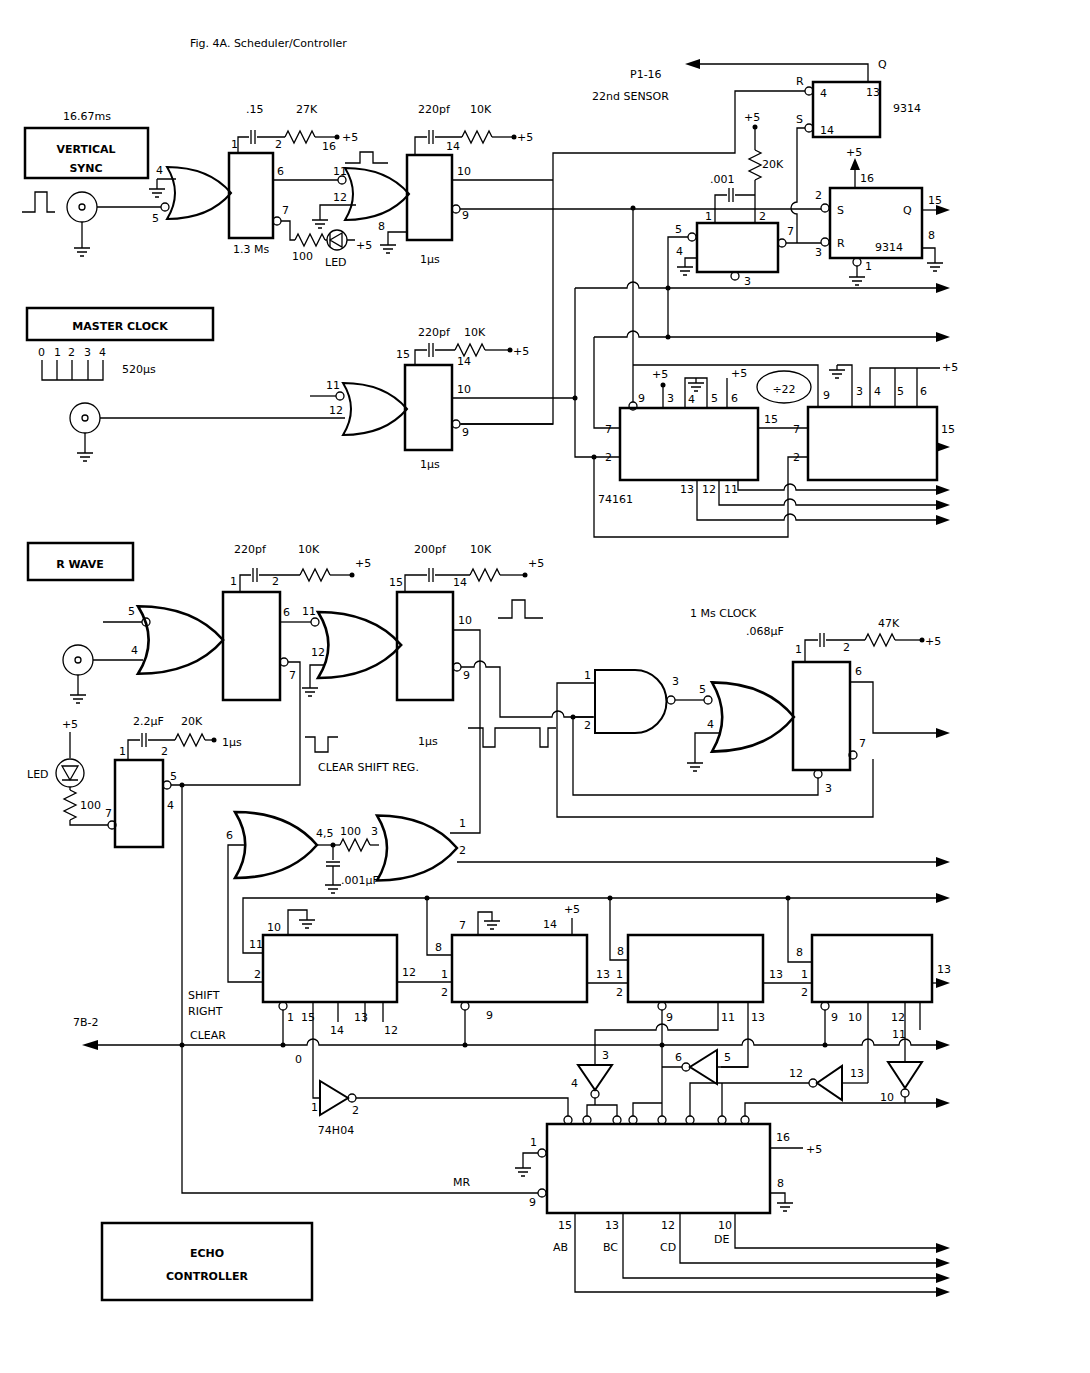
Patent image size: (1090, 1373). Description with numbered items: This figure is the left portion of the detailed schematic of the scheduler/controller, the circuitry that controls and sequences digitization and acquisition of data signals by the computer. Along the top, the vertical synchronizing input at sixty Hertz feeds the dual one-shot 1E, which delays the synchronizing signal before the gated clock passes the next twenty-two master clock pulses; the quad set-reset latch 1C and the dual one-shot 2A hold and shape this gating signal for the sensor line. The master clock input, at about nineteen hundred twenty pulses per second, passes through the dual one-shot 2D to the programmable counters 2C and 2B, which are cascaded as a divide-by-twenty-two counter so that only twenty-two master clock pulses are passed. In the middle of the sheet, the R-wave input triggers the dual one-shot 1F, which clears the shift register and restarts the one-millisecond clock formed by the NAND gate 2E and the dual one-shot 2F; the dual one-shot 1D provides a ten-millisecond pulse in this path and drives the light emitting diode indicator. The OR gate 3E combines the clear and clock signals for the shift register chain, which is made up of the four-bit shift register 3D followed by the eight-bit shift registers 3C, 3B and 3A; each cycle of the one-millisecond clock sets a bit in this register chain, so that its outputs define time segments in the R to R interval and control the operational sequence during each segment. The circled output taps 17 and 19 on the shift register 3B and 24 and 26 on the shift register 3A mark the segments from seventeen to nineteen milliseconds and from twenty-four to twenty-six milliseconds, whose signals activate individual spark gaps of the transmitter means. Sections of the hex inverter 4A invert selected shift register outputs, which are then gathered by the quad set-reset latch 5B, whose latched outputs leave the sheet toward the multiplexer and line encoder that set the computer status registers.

The shift register output tap 17 is at (661, 1019).
The shift register output tap 19 is at (738, 1020).
The shift register output tap 24 is at (870, 1033).
The shift register output tap 26 is at (915, 1022).
The quad set-reset latch 1C is at (867, 170).
The dual one-shot 1D is at (139, 814).
The dual one-shot 1E is at (340, 196).
The dual one-shot 1F is at (338, 646).
The dual one-shot 2A is at (737, 247).
The programmable counter 2B is at (872, 443).
The programmable counter 2C is at (689, 444).
The dual one-shot 2D is at (428, 407).
The NAND gate 2E is at (631, 701).
The dual one-shot 2F is at (821, 716).
The eight-bit shift register 3A is at (872, 968).
The eight-bit shift register 3B is at (695, 968).
The eight-bit shift register 3C is at (519, 968).
The four-bit shift register 3D is at (330, 968).
The OR gate 3E is at (346, 846).
The hex inverter 4A is at (621, 1082).
The quad set-reset latch 5B is at (658, 1168).